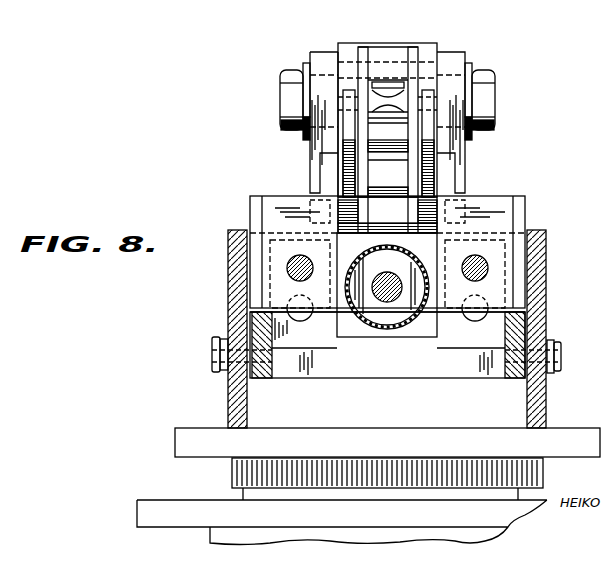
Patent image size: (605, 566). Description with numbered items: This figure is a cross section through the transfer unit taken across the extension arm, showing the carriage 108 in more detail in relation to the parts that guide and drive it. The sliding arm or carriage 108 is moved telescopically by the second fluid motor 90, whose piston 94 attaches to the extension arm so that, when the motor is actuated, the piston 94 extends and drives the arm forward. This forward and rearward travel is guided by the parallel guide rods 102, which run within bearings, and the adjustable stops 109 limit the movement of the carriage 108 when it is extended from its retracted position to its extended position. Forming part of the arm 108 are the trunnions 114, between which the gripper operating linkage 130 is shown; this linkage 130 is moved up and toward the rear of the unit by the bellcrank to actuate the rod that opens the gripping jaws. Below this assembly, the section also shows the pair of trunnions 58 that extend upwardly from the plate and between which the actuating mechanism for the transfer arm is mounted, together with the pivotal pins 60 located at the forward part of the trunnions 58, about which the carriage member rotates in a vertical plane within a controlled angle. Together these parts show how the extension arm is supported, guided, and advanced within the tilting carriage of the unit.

The linkage 130 is at (425, 95).
The trunnions 114 is at (457, 62).
The sliding arm 108 is at (500, 212).
The parallel rods 102 is at (300, 268).
The piston 94 is at (385, 282).
The second fluid motor 90 is at (373, 330).
The adjustable stops 109 is at (473, 314).
The trunnions 58 is at (536, 315).
The pivotal pins 60 is at (549, 355).